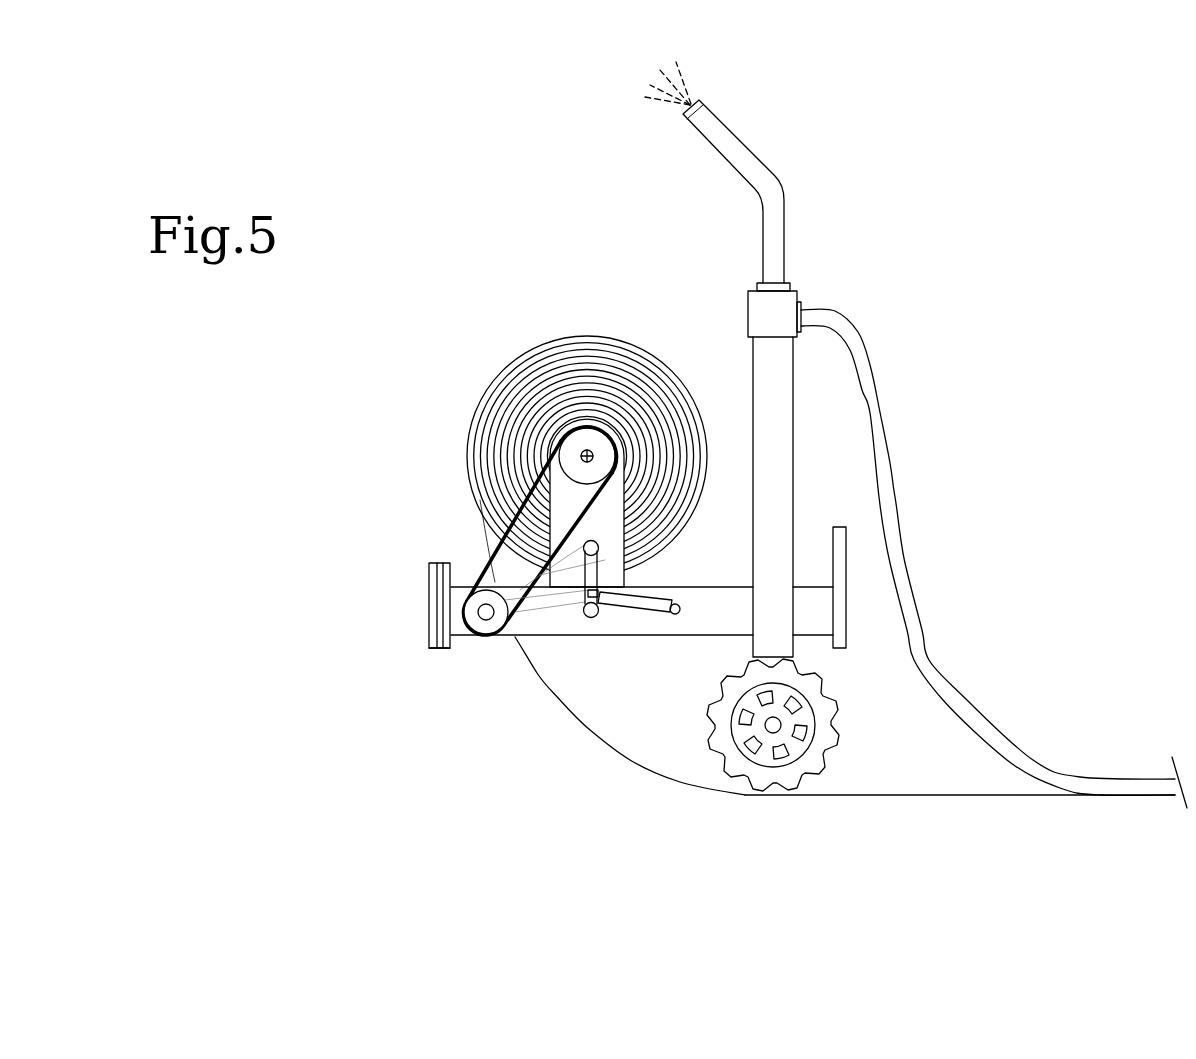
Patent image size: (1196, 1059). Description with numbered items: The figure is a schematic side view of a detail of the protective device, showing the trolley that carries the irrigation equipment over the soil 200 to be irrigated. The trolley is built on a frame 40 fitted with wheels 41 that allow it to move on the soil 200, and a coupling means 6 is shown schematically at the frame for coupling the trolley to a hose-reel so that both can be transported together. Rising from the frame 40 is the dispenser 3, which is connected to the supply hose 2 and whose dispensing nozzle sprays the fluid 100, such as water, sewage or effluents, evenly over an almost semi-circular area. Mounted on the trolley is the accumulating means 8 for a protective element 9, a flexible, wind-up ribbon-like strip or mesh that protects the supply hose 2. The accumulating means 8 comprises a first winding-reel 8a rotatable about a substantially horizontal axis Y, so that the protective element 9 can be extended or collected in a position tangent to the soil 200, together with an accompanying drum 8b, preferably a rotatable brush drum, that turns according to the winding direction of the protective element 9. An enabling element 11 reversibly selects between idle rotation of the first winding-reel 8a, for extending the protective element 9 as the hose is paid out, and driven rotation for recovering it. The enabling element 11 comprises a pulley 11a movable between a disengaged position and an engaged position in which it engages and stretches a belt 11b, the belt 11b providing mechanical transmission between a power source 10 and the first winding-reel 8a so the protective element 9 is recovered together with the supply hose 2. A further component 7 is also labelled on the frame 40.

The fluid 100 is at (622, 87).
The dispenser 3 is at (785, 220).
The supply hose 2 is at (897, 499).
The accumulating means 8 is at (498, 348).
The first winding-reel 8a is at (604, 418).
The axis Y is at (586, 452).
The enabling element 11 is at (463, 383).
The belt 11b is at (479, 567).
The pulley 11a is at (574, 604).
The accompanying drum 8b is at (488, 650).
The frame 40 is at (720, 618).
The left end cap / foot 7 is at (421, 591).
The coupling means 6 is at (848, 602).
The power source 10 is at (413, 655).
The protective element 9 is at (562, 731).
The wheels 41 is at (808, 777).
The soil 200 is at (342, 815).